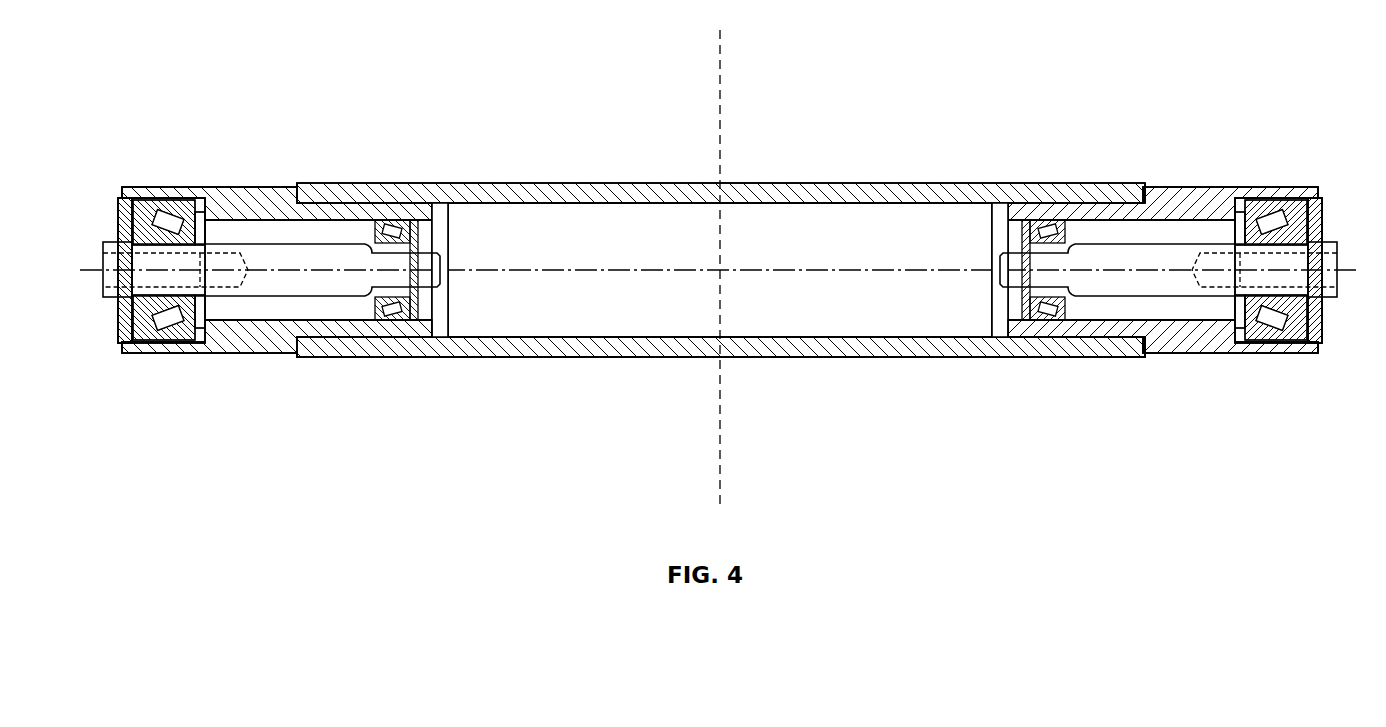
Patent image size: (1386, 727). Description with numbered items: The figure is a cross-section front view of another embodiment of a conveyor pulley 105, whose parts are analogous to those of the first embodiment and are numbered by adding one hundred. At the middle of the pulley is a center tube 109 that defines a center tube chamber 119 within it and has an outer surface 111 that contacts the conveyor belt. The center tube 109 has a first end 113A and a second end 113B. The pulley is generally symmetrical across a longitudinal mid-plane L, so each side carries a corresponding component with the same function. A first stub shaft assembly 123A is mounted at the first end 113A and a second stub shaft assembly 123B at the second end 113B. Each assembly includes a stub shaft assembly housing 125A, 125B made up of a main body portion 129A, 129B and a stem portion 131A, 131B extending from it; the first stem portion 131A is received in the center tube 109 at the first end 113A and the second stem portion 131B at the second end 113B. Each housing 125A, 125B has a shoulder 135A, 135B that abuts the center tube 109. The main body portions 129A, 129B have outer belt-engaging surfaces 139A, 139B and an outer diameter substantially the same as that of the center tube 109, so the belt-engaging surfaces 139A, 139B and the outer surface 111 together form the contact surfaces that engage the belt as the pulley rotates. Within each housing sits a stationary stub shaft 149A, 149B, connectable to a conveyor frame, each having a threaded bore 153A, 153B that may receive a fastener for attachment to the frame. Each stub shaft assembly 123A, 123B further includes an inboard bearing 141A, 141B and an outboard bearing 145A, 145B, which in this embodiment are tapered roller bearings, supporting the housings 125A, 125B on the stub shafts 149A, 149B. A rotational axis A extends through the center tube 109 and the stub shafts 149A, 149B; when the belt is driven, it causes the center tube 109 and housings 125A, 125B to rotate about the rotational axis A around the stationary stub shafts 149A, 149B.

The conveyor pulley 105 is at (321, 114).
The center tube 109 is at (537, 193).
The outer surface 111 is at (568, 357).
The first end 113A is at (290, 193).
The second end 113B is at (1155, 193).
The center tube chamber 119 is at (816, 226).
The first stub shaft assembly 123A is at (133, 403).
The second stub shaft assembly 123B is at (1280, 376).
The first stub shaft assembly housing 125A is at (198, 353).
The second stub shaft assembly housing 125B is at (1233, 358).
The first main body portion 129A is at (247, 195).
The second main body portion 129B is at (1187, 195).
The first stem portion 131A is at (343, 333).
The second stem portion 131B is at (1077, 335).
The first shoulder 135A is at (307, 355).
The second shoulder 135B is at (1137, 355).
The first belt-engaging surface 139A is at (255, 348).
The second belt-engaging surface 139B is at (1173, 353).
The first inboard bearing 141A is at (383, 220).
The second inboard bearing 141B is at (1050, 217).
The first outboard bearing 145A is at (135, 235).
The second outboard bearing 145B is at (1307, 310).
The first stub shaft 149A is at (283, 255).
The second stub shaft 149B is at (1125, 255).
The first threaded bore 153A is at (148, 280).
The second threaded bore 153B is at (1250, 258).
The rotational axis A is at (697, 270).
The longitudinal mid-plane L is at (730, 112).